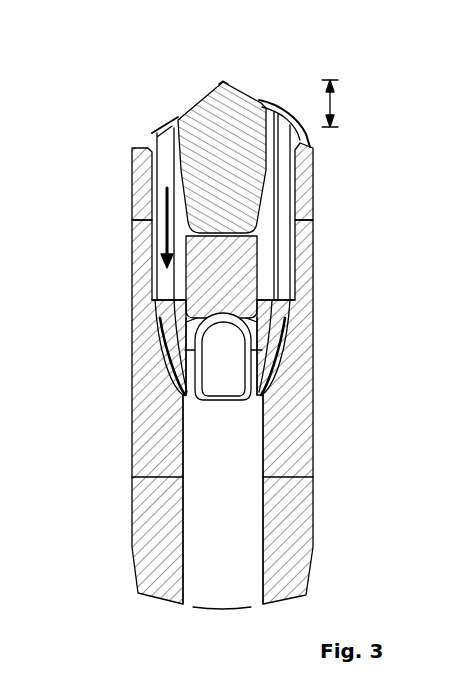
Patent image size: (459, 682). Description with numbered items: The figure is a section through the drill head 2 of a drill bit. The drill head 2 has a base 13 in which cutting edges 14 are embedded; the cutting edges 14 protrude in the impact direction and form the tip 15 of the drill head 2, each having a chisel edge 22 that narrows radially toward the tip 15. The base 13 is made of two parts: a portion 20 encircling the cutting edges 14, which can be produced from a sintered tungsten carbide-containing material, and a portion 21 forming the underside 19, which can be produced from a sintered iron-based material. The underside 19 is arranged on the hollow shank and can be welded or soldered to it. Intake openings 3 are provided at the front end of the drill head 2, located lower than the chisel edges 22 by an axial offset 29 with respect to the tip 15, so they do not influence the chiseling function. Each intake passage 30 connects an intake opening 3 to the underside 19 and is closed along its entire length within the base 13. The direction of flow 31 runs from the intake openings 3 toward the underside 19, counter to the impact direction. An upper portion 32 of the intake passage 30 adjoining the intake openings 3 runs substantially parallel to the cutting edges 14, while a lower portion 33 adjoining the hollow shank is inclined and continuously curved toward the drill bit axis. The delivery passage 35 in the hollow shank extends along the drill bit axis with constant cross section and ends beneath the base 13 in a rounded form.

The drill head 2 is at (221, 312).
The intake openings 3 is at (156, 133).
The base 13 is at (283, 373).
The cutting edges 14 is at (250, 180).
The tip 15 is at (225, 78).
The underside 19 is at (276, 478).
The portion of the base encircling the cutting edges 20 is at (307, 188).
The portion forming the underside 21 is at (305, 233).
The chisel edge 22 is at (260, 101).
The axial offset 29 is at (333, 104).
The intake passage 30 is at (150, 273).
The direction of flow 31 is at (163, 227).
The upper portion 32 is at (163, 152).
The lower portion 33 is at (163, 320).
The delivery passage 35 is at (238, 432).